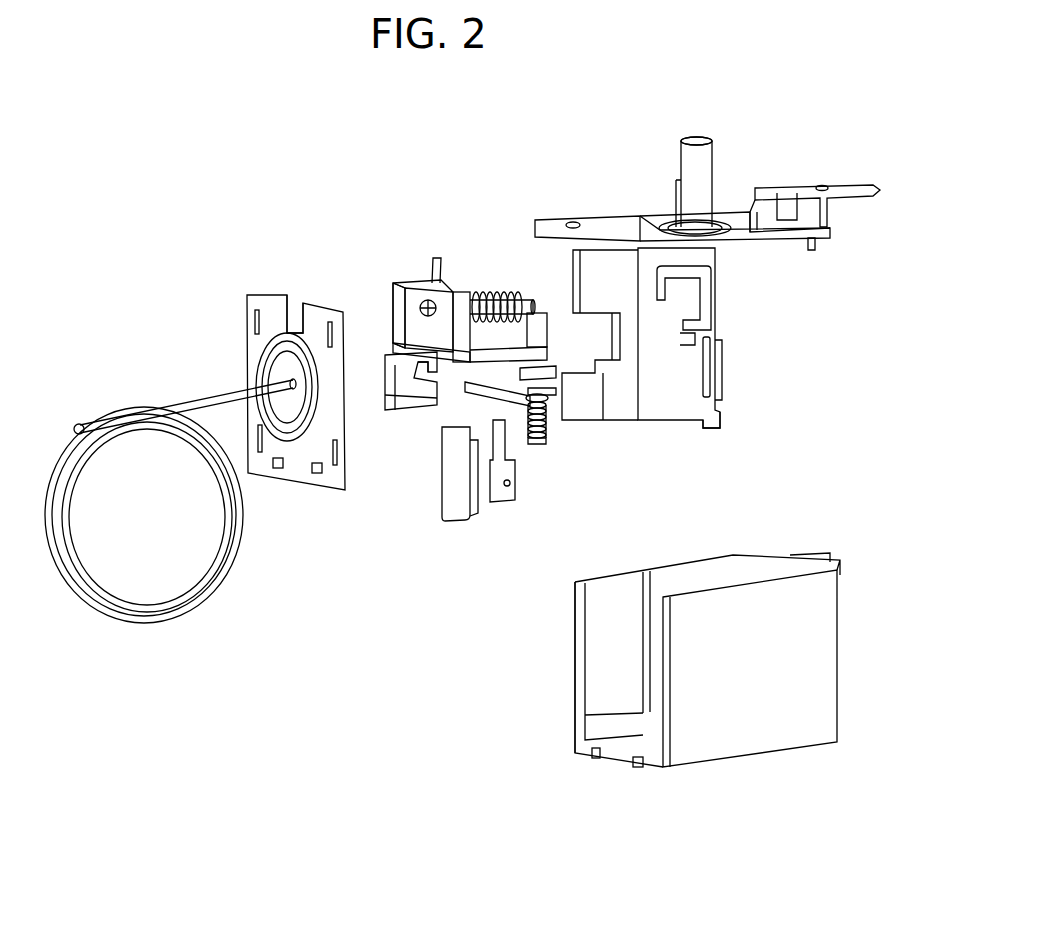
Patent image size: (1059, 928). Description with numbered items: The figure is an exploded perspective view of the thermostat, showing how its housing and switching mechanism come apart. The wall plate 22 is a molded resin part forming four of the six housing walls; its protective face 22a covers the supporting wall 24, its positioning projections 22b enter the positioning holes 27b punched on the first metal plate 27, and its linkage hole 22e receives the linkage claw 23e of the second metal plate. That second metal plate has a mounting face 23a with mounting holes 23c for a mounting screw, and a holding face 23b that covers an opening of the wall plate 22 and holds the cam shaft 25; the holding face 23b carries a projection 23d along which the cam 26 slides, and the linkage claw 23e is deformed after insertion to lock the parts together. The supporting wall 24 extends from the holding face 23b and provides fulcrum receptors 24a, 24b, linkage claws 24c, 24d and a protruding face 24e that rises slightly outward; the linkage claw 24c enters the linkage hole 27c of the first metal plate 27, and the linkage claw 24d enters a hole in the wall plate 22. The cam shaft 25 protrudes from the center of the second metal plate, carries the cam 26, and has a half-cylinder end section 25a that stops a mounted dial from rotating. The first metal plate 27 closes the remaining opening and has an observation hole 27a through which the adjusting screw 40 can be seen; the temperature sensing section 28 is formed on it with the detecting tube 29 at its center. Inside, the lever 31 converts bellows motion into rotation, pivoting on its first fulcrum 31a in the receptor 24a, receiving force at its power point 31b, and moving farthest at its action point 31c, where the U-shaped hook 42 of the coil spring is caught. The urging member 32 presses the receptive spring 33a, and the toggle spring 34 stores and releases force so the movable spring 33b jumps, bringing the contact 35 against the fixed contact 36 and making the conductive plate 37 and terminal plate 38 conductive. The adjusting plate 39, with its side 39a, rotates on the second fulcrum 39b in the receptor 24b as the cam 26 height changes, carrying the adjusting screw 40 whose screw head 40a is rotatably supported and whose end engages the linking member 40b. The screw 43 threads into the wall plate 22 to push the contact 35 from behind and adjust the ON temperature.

The wall plate 22 is at (787, 732).
The protective face 22a is at (613, 667).
The positioning projections 22b is at (636, 762).
The linkage hole 22e is at (802, 555).
The mounting face 23a is at (838, 188).
The holding face 23b is at (738, 213).
The mounting holes 23c is at (573, 222).
The projection 23d is at (770, 238).
The linkage claw 23e is at (817, 246).
The supporting wall 24 is at (718, 283).
The fulcrum receptor 24a is at (712, 380).
The fulcrum receptor 24b is at (712, 335).
The linkage claw 24c is at (650, 293).
The linkage claw 24d is at (708, 425).
The protruding face 24e is at (716, 360).
The cam shaft 25 is at (708, 170).
The end section 25a is at (696, 138).
The cam 26 is at (668, 225).
The first metal plate 27 is at (257, 347).
The observation hole 27a is at (295, 312).
The positioning holes 27b is at (313, 475).
The linkage hole 27c is at (328, 340).
The temperature sensing section 28 is at (270, 378).
The detecting tube 29 is at (192, 607).
The lever 31 is at (408, 392).
The first fulcrum 31a is at (392, 405).
The power point 31b is at (422, 373).
The action point 31c is at (510, 290).
The urging member 32 is at (470, 430).
The receptive spring 33a is at (487, 390).
The movable spring 33b is at (547, 395).
The toggle spring 34 is at (545, 445).
The contact 35 is at (535, 400).
The fixed contact 36 is at (540, 367).
The conductive plate 37 is at (452, 515).
The terminal plate 38 is at (508, 505).
The adjusting plate 39 is at (430, 257).
The side face of adjusting block 39a is at (393, 290).
The second fulcrum 39b is at (388, 348).
The adjusting screw 40 is at (470, 297).
The screw head 40a is at (422, 300).
The linking member 40b is at (477, 300).
The U-shaped hook 42 is at (495, 290).
The screw 43 is at (530, 440).